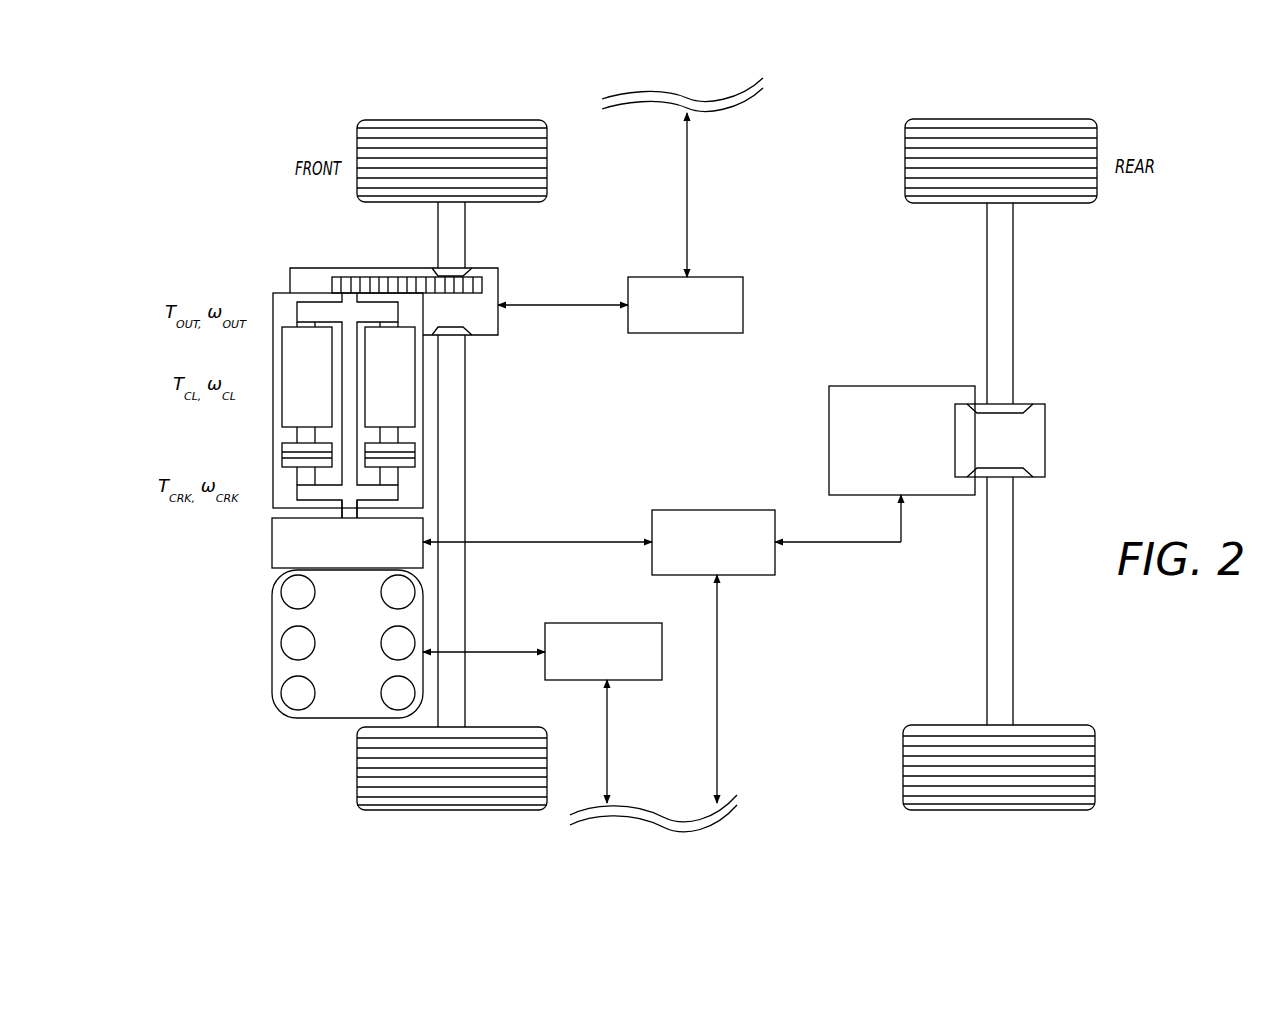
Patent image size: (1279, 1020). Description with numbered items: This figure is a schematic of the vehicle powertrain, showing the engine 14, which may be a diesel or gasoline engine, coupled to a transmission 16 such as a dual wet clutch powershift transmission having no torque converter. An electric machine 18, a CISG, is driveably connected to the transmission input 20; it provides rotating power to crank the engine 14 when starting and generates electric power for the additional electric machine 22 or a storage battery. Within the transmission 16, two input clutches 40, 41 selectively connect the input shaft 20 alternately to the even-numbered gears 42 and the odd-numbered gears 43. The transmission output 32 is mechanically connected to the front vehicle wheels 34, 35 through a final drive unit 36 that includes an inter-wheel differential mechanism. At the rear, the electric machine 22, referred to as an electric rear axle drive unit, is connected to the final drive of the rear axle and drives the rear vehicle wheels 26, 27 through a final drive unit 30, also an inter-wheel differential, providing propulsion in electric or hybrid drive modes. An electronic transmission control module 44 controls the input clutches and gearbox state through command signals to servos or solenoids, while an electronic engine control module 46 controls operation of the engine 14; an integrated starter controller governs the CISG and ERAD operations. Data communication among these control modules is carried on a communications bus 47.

The engine 14 is at (277, 658).
The transmission 16 is at (278, 420).
The electric machine 18 is at (283, 543).
The transmission input 20 is at (350, 508).
The electric machine 22 is at (901, 386).
The vehicle wheel 26 is at (1068, 137).
The vehicle wheel 27 is at (1065, 790).
The final drive unit 30 is at (1036, 439).
The transmission output 32 is at (347, 308).
The vehicle wheel 34 is at (387, 138).
The vehicle wheel 35 is at (387, 790).
The final drive unit 36 is at (498, 287).
The input clutch 40 is at (400, 465).
The input clutch 41 is at (290, 467).
The even-numbered gears 42 is at (413, 368).
The odd-numbered gears 43 is at (280, 363).
The electronic transmission control module 44 is at (733, 277).
The electronic engine control module 46 is at (628, 682).
The communications bus 47 is at (693, 108).